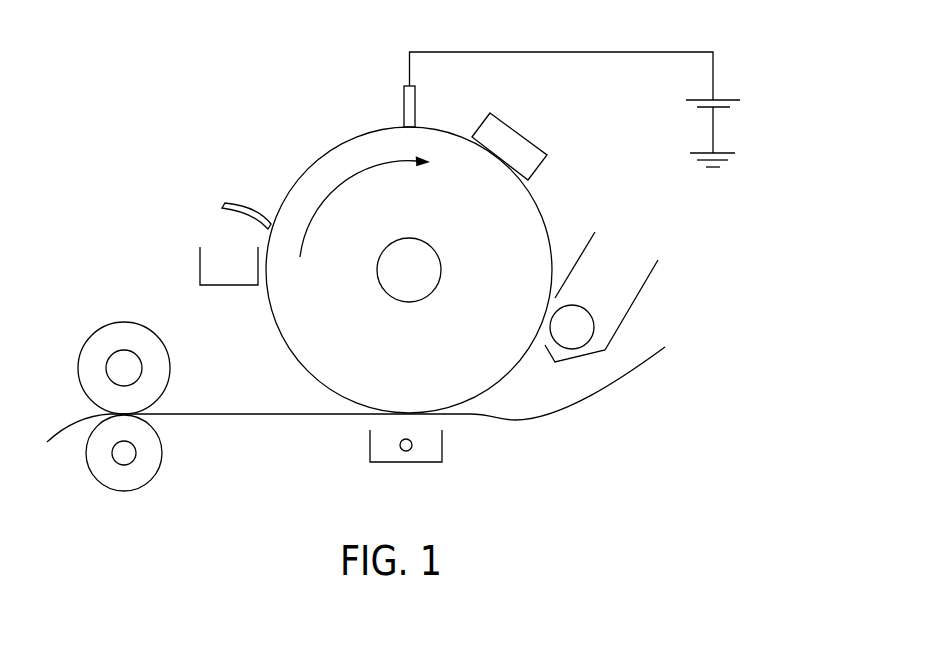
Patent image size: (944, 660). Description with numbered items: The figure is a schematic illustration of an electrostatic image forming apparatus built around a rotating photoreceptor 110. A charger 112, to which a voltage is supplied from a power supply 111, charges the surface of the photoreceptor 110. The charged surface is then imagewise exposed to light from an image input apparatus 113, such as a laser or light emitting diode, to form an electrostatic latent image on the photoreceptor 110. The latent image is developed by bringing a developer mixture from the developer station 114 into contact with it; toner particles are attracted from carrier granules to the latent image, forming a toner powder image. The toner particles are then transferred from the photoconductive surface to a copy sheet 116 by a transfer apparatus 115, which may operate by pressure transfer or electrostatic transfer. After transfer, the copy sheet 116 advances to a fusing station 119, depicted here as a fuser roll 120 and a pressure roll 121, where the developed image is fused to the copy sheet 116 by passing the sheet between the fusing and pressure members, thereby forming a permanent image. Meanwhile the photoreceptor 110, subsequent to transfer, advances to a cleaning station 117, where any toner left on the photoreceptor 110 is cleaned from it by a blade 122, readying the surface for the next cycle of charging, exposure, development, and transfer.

The photoreceptor 110 is at (540, 207).
The power supply 111 is at (713, 80).
The charger 112 is at (403, 106).
The image input apparatus 113 is at (523, 133).
The developer station 114 is at (608, 284).
The transfer apparatus 115 is at (442, 440).
The copy sheet 116 is at (618, 380).
The cleaning station 117 is at (205, 218).
The fusing station 119 is at (75, 305).
The fuser roll 120 is at (170, 368).
The pressure roll 121 is at (163, 455).
The blade 122 is at (250, 213).